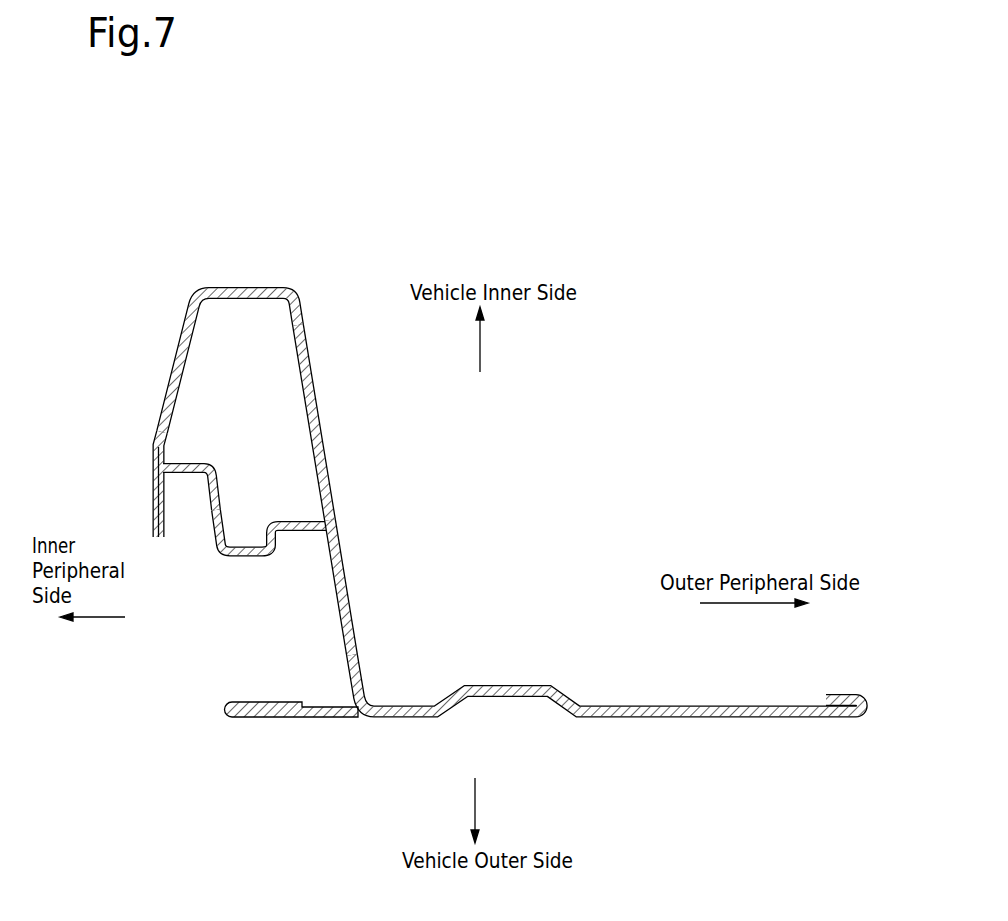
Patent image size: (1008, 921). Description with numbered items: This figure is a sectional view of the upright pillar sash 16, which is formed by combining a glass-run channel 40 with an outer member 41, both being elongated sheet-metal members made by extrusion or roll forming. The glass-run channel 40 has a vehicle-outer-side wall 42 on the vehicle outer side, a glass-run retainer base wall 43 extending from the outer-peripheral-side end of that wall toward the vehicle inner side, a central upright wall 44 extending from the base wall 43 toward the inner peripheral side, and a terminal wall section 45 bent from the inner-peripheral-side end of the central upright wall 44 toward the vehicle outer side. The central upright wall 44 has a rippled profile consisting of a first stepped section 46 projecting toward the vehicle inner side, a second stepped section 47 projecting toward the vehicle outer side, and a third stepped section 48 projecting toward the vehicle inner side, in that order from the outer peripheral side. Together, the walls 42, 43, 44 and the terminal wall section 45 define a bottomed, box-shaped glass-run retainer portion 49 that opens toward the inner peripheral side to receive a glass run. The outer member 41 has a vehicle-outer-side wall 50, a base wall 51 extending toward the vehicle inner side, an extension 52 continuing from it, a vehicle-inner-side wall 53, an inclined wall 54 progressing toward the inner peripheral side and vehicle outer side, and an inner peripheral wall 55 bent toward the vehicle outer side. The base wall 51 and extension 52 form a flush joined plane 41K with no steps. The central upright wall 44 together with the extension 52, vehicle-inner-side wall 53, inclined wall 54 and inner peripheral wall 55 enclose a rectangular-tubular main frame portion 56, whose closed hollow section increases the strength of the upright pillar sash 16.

The upright pillar sash 16 is at (636, 423).
The glass-run channel 40 is at (230, 730).
The outer member 41 is at (738, 726).
The joined plane 41K is at (423, 553).
The vehicle-outer-side wall 42 is at (278, 718).
The glass-run retainer base wall 43 is at (345, 652).
The central upright wall 44 is at (297, 589).
The terminal wall section 45 is at (173, 540).
The first stepped section 46 is at (300, 532).
The second stepped section 47 is at (248, 557).
The third stepped section 48 is at (200, 476).
The glass-run retainer portion 49 is at (222, 647).
The vehicle-outer-side wall 50 is at (633, 718).
The base wall 51 is at (343, 565).
The extension 52 is at (322, 437).
The vehicle-inner-side wall 53 is at (245, 289).
The inclined wall 54 is at (176, 352).
The inner peripheral wall 55 is at (152, 500).
The main frame portion 56 is at (292, 285).